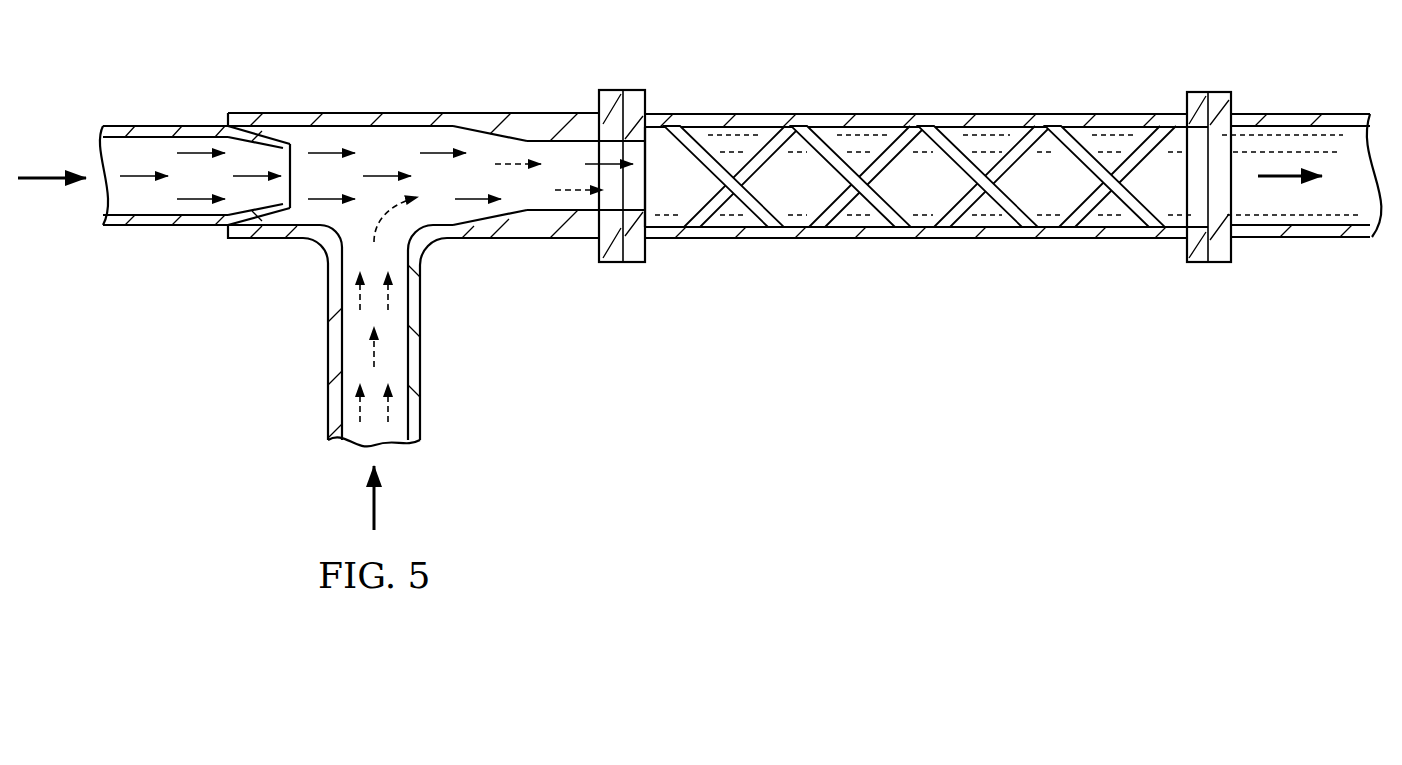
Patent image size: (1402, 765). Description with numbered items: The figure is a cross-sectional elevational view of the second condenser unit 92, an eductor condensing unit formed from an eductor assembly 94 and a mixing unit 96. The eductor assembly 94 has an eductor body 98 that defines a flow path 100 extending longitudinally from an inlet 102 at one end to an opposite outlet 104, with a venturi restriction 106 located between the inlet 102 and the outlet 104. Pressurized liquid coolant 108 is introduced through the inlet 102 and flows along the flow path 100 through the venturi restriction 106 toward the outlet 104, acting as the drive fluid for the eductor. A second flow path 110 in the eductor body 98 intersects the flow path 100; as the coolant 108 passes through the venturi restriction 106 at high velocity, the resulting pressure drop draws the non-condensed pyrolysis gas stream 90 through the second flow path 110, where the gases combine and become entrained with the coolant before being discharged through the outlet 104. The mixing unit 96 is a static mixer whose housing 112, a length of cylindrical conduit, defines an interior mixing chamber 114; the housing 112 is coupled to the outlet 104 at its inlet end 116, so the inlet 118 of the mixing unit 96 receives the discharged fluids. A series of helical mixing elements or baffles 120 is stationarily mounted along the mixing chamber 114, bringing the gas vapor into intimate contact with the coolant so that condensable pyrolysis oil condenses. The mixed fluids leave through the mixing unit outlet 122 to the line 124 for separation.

The non-condensed pyrolysis gas stream 90 is at (372, 504).
The second condenser unit 92 is at (641, 320).
The eductor assembly 94 is at (335, 112).
The mixing unit 96 is at (950, 110).
The eductor body 98 is at (461, 113).
The flow path 100 is at (197, 133).
The inlet 102 is at (117, 125).
The outlet 104 is at (574, 136).
The venturi restriction 106 is at (293, 146).
The pressurized liquid coolant 108 is at (44, 170).
The second flow path 110 is at (415, 340).
The mixing vessel or housing 112 is at (1072, 123).
The interior mixing chamber 114 is at (923, 214).
The inlet end 116 is at (647, 252).
The inlet of the mixing unit 118 is at (659, 124).
The mixing elements or baffles 120 is at (1130, 214).
The mixing unit outlet 122 is at (1173, 119).
The line 124 is at (1343, 113).